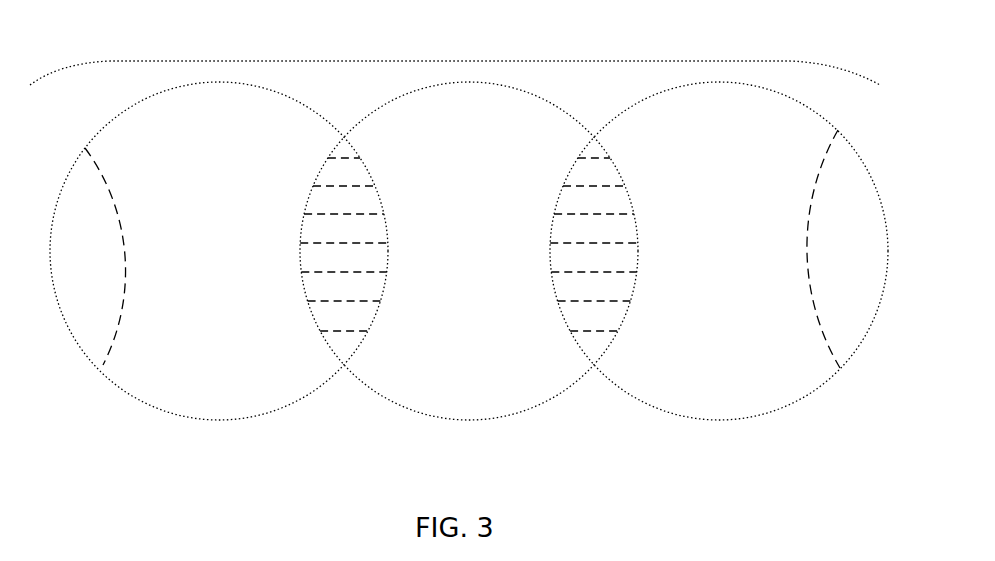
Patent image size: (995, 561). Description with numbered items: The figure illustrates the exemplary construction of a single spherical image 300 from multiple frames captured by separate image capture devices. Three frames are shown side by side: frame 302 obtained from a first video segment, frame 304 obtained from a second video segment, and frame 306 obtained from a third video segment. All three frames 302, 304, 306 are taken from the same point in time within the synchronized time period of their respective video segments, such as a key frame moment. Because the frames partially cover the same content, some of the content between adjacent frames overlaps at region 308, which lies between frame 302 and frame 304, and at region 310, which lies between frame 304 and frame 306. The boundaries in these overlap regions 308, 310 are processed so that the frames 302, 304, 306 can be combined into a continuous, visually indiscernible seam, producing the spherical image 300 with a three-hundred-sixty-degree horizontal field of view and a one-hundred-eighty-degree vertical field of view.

The spherical image 300 is at (455, 58).
The frame 302 is at (187, 435).
The frame 304 is at (508, 418).
The frame 306 is at (783, 420).
The overlap region 308 is at (345, 334).
The overlap region 310 is at (595, 334).